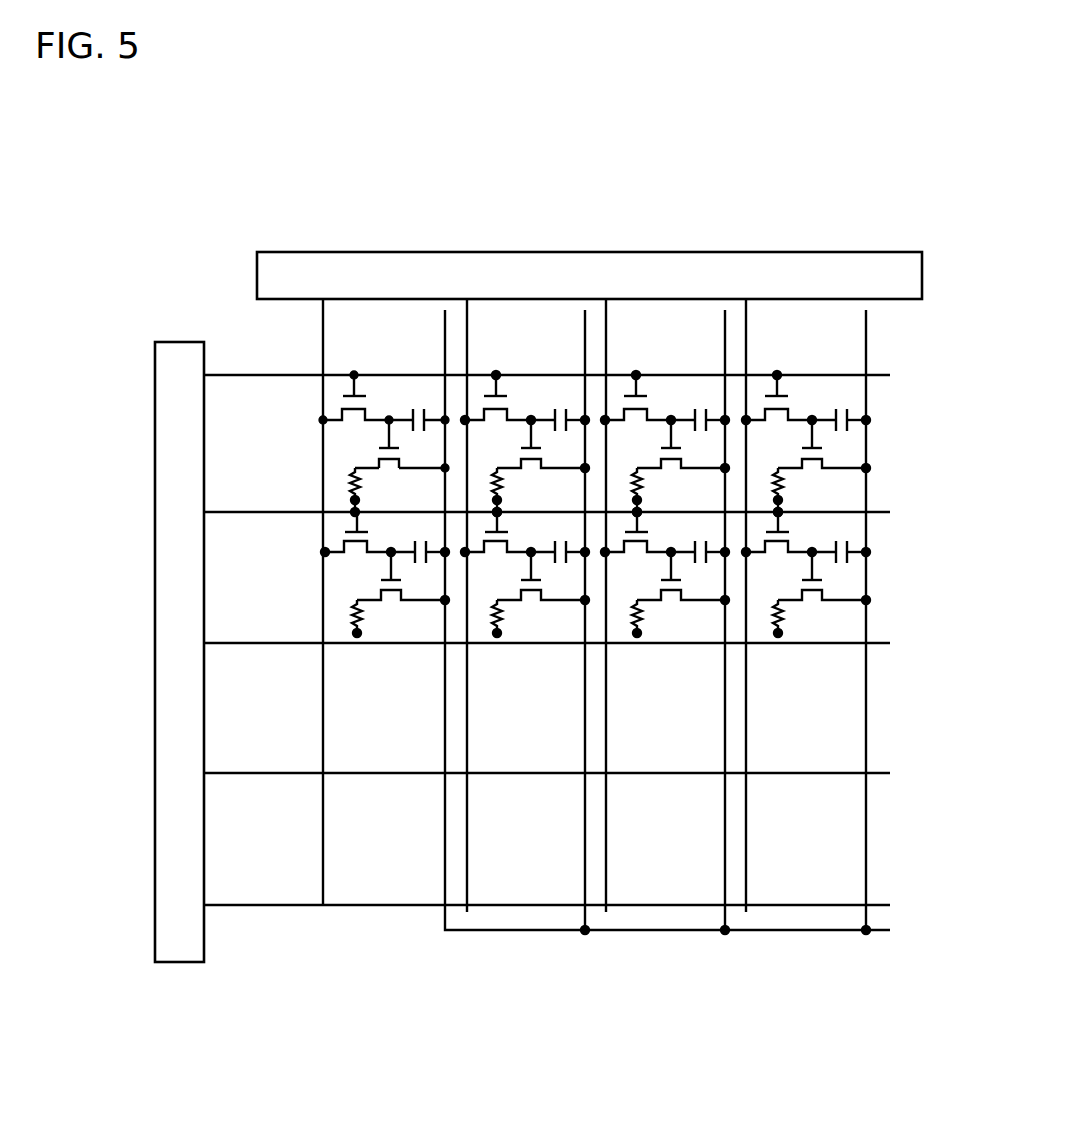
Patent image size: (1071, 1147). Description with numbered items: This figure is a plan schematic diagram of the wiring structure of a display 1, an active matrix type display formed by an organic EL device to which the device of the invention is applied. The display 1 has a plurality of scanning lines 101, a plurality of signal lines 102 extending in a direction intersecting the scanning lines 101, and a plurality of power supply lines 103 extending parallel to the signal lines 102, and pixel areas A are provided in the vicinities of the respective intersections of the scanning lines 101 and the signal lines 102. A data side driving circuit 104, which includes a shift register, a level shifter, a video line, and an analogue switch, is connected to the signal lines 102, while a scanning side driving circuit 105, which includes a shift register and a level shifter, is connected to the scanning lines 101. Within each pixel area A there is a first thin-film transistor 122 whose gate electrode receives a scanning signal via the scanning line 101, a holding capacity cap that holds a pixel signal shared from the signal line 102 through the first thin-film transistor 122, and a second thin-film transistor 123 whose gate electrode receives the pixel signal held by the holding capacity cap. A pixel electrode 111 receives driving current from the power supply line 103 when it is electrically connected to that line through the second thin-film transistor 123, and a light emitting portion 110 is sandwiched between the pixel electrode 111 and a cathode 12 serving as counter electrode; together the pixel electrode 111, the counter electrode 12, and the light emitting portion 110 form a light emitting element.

The display 1 is at (867, 175).
The scanning lines 101 is at (228, 373).
The signal lines 102 is at (321, 316).
The power supply lines 103 is at (444, 322).
The data side driving circuit 104 is at (257, 271).
The scanning side driving circuit 105 is at (155, 609).
The light emitting portion 110 is at (350, 487).
The pixel electrode 111 is at (360, 466).
The cathode 12 is at (352, 502).
The first thin-film transistor 122 is at (338, 401).
The second thin-film transistor 123 is at (388, 474).
The pixel area A is at (354, 437).
The holding capacity cap is at (422, 400).